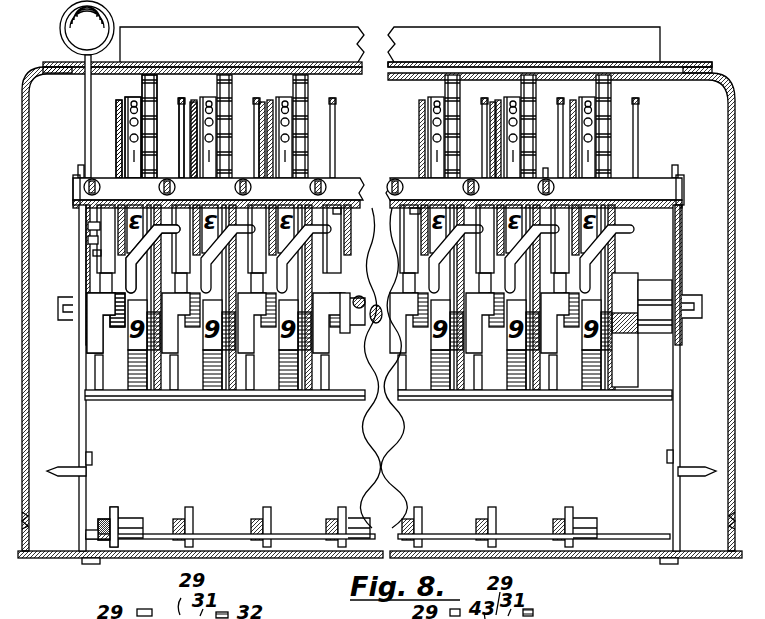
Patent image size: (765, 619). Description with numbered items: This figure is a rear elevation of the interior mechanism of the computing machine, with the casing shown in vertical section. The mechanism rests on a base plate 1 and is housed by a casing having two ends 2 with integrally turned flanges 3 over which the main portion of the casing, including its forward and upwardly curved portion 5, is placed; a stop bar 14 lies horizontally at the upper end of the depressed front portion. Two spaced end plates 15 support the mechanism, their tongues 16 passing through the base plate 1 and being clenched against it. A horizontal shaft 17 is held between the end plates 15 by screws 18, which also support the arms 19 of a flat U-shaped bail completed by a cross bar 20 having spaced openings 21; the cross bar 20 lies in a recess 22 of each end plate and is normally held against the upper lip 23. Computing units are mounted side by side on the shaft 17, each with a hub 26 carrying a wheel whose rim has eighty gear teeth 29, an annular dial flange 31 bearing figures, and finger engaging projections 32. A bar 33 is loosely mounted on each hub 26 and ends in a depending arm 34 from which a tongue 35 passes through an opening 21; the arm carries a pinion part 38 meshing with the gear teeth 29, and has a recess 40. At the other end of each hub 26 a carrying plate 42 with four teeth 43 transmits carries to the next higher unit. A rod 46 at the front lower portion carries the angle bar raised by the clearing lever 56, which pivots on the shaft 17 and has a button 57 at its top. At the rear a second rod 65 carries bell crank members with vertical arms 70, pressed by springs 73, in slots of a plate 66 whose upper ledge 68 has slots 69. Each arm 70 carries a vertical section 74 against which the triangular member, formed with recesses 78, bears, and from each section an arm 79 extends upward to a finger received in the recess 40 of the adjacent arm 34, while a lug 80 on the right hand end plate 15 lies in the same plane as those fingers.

The base plate 1 is at (290, 560).
The casing end 2 is at (24, 380).
The flange 3 is at (55, 74).
The forward and upwardly curved portion 5 is at (413, 62).
The second stop bar 14 is at (592, 35).
The end plate 15 is at (80, 415).
The tongue 16 is at (92, 565).
The horizontal shaft 17 is at (361, 328).
The screw 18 is at (64, 320).
The arm 19 is at (82, 252).
The cross bar 20 is at (346, 178).
The opening 21 is at (158, 188).
The recess 22 is at (75, 205).
The upper lip 23 is at (78, 170).
The hub 26 is at (626, 340).
The gear teeth 29 is at (118, 100).
The annular flange 31 is at (284, 97).
The projection 32 is at (300, 76).
The bar 33 is at (88, 226).
The depending arm 34 is at (546, 176).
The tongue 35 is at (93, 178).
The pinion part 38 is at (360, 296).
The recess 40 is at (338, 214).
The carrying plate 42 is at (190, 130).
The tooth 43 is at (182, 98).
The horizontal rod 46 is at (66, 478).
The lever 56 is at (86, 96).
The button 57 is at (112, 22).
The second horizontal rod 65 is at (100, 530).
The sheet metal plate 66 is at (656, 442).
The ledge 68 is at (232, 402).
The slot 69 is at (290, 402).
The vertical arm 70 is at (112, 402).
The spring 73 is at (180, 518).
The vertical section 74 is at (92, 338).
The recess 78 is at (112, 294).
The arm 79 is at (150, 258).
The lug 80 is at (93, 240).